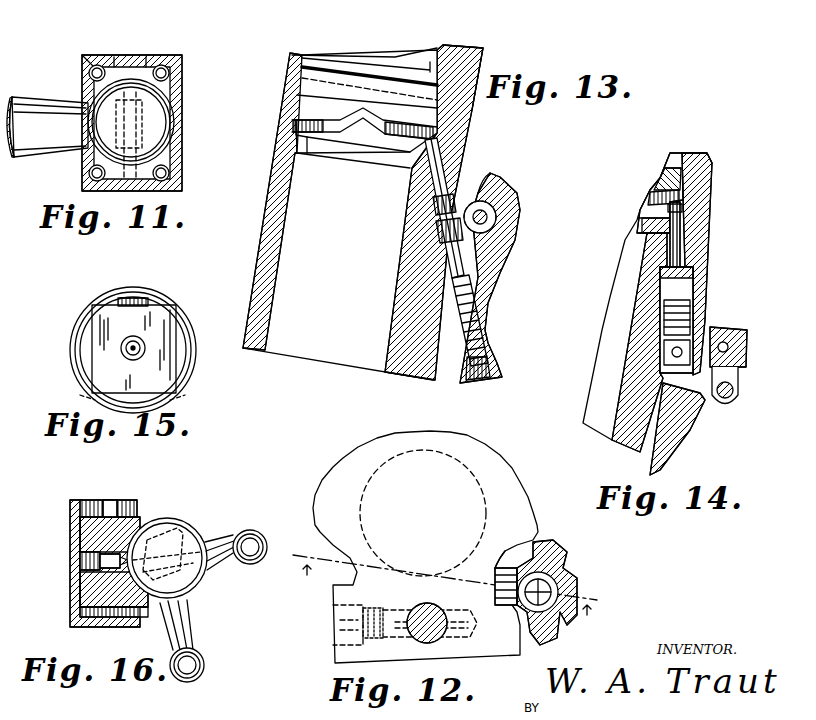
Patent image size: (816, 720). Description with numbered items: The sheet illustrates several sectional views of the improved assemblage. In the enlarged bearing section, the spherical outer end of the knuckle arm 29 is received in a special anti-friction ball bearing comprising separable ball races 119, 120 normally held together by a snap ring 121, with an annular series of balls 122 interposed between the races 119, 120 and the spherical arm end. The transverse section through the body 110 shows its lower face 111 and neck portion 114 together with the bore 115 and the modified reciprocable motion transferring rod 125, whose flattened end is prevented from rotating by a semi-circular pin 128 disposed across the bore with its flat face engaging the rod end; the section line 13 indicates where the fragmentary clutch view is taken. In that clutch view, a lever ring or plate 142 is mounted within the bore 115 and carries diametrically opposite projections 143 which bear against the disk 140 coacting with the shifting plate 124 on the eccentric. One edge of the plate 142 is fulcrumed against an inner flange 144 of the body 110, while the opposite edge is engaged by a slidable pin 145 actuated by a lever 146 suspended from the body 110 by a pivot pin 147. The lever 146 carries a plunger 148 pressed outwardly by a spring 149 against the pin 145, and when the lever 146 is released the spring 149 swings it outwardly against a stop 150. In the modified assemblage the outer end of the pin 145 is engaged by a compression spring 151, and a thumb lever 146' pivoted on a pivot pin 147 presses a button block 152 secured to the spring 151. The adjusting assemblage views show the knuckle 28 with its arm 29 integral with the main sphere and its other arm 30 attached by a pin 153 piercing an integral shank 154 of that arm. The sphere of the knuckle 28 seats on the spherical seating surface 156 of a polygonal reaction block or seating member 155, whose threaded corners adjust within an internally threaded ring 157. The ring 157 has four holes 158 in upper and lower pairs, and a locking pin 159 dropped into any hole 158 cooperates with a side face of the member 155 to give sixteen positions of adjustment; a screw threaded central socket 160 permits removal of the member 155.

In FIG. 13, the body 110 is at (272, 252).
In FIG. 14, the body 110 is at (632, 382).
In FIG. 12, the body 110 is at (347, 481).
In FIG. 13, the bottom face of body 111 is at (310, 340).
In FIG. 14, the bottom face of body 111 is at (610, 418).
In FIG. 12, the neck of body 114 is at (520, 515).
In FIG. 13, the bore 115 is at (428, 48).
In FIG. 14, the bore 115 is at (712, 160).
In FIG. 12, the bore 115 is at (480, 470).
In FIG. 11, the ball race 119 is at (84, 60).
In FIG. 11, the ball race 120 is at (176, 62).
In FIG. 11, the snap ring 121 is at (126, 62).
In FIG. 11, the balls 122 is at (90, 73).
In FIG. 13, the shifting plate 124 is at (352, 60).
In FIG. 14, the shifting plate 124 is at (677, 155).
In FIG. 12, the motion transferring rod 125 is at (430, 603).
In FIG. 12, the semi-circular pin 128 is at (398, 612).
In FIG. 12, the section line 13 is at (445, 577).
In FIG. 13, the disk 140 is at (312, 84).
In FIG. 14, the disk 140 is at (667, 178).
In FIG. 13, the lever ring or plate 142 is at (430, 128).
In FIG. 14, the lever ring or plate 142 is at (652, 197).
In FIG. 13, the projections 143 is at (362, 120).
In FIG. 13, the inner flange 144 is at (300, 140).
In FIG. 14, the inner flange 144 is at (652, 225).
In FIG. 13, the pin 145 is at (440, 165).
In FIG. 14, the pin 145 is at (682, 228).
In FIG. 13, the lever 146 is at (500, 278).
In FIG. 12, the lever 146 is at (561, 592).
In FIG. 14, the thumb lever 146' is at (686, 429).
In FIG. 13, the pivot pin 147 is at (488, 220).
In FIG. 14, the pivot pin 147 is at (726, 400).
In FIG. 13, the plunger 148 is at (438, 238).
In FIG. 13, the spring 149 is at (482, 318).
In FIG. 13, the stop 150 is at (490, 188).
In FIG. 14, the compression spring 151 is at (664, 318).
In FIG. 14, the button block 152 is at (668, 356).
In FIG. 16, the pin 153 is at (208, 573).
In FIG. 16, the shank 154 is at (202, 593).
In FIG. 15, the reaction block or seating member 155 is at (165, 366).
In FIG. 16, the reaction block or seating member 155 is at (90, 532).
In FIG. 16, the spherical seating surface 156 is at (97, 585).
In FIG. 15, the internally threaded ring 157 is at (76, 350).
In FIG. 16, the internally threaded ring 157 is at (87, 627).
In FIG. 15, the holes 158 is at (88, 300).
In FIG. 16, the holes 158 is at (148, 480).
In FIG. 15, the pin 159 is at (150, 300).
In FIG. 16, the pin 159 is at (107, 507).
In FIG. 15, the screw threaded central socket 160 is at (125, 352).
In FIG. 16, the screw threaded central socket 160 is at (80, 563).
In FIG. 16, the knuckle 28 is at (173, 523).
In FIG. 11, the knuckle arm 29 is at (47, 127).
In FIG. 16, the knuckle arm 29 is at (250, 535).
In FIG. 16, the oscillatory arm 30 is at (194, 660).